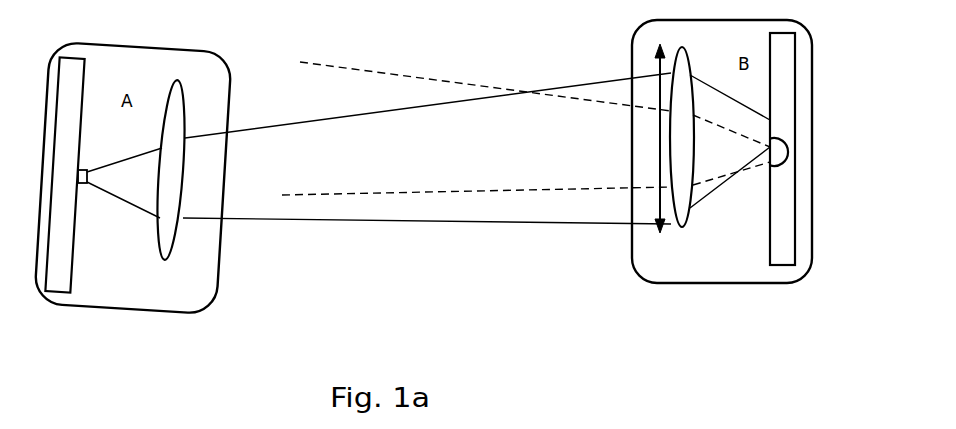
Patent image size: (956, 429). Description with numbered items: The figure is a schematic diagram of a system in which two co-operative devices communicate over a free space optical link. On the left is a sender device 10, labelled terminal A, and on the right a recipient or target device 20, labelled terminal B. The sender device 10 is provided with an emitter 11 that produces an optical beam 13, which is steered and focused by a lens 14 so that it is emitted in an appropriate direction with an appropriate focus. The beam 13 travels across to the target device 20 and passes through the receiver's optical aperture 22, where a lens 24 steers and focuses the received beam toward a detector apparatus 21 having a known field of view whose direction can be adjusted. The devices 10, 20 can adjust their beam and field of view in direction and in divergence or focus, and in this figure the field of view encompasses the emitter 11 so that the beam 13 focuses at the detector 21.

The sender device 10 is at (85, 293).
The emitter 11 is at (83, 185).
The optical beam 13 is at (405, 226).
The lens 14 is at (167, 227).
The recipient or target device 20 is at (685, 253).
The detector apparatus 21 is at (775, 170).
The optical aperture 22 is at (657, 172).
The lens 24 is at (678, 210).